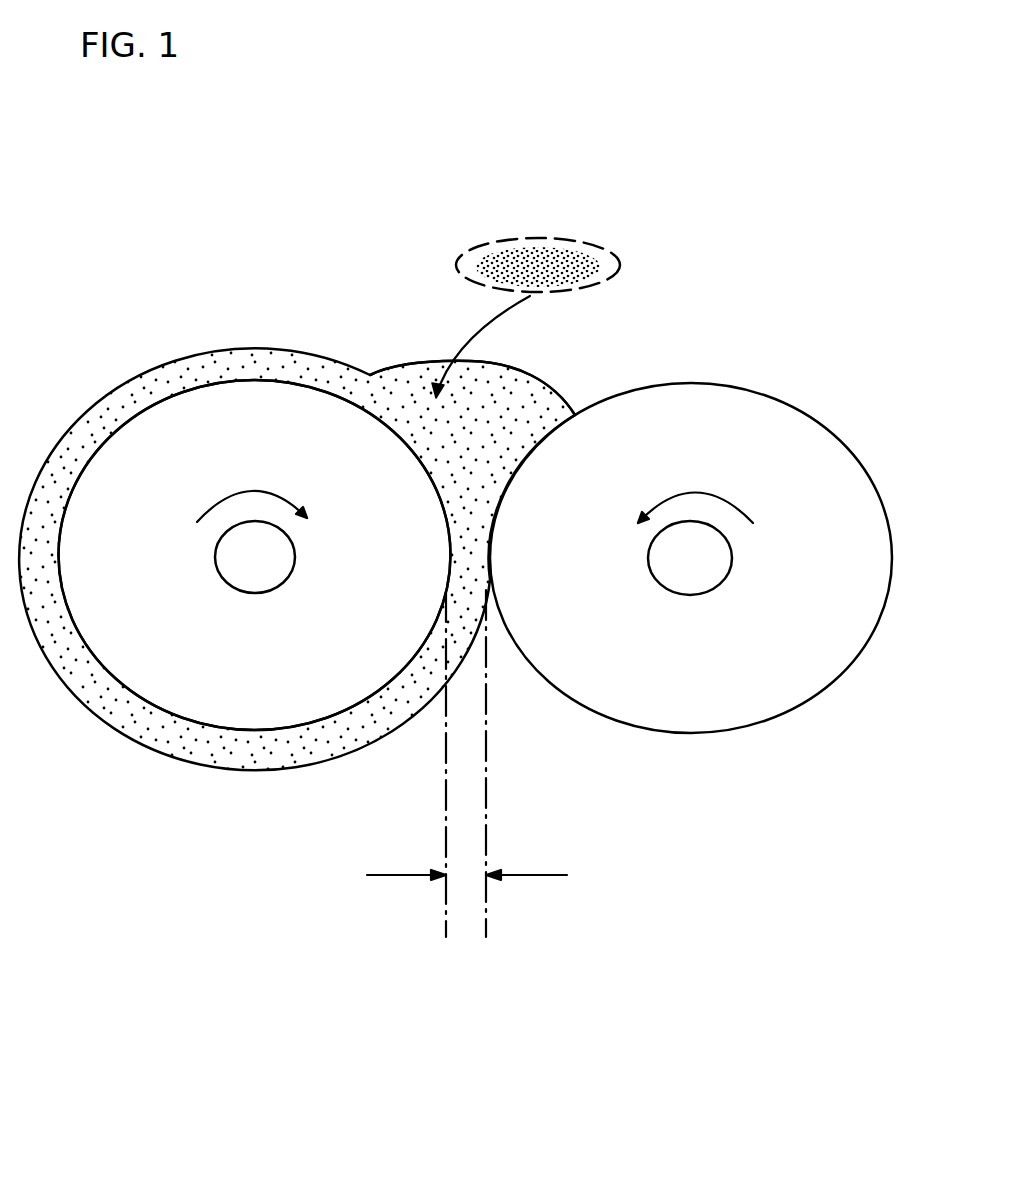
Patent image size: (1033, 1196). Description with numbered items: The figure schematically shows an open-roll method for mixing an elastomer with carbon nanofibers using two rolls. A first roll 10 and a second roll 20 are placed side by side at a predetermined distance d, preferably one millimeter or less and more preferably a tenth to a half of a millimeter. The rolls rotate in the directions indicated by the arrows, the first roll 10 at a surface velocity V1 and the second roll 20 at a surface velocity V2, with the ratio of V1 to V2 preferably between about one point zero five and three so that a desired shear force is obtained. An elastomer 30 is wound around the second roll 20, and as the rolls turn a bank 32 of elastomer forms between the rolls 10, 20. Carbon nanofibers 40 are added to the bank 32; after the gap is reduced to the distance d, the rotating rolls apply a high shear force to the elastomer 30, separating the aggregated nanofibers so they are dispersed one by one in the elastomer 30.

The first roll 10 is at (790, 647).
The second roll 20 is at (155, 645).
The elastomer 30 is at (180, 372).
The bank 32 is at (493, 397).
The carbon nanofibers 40 is at (562, 237).
The surface velocity of the first roll V1 is at (695, 490).
The surface velocity of the second roll V2 is at (252, 488).
The distance between the rolls d is at (460, 938).